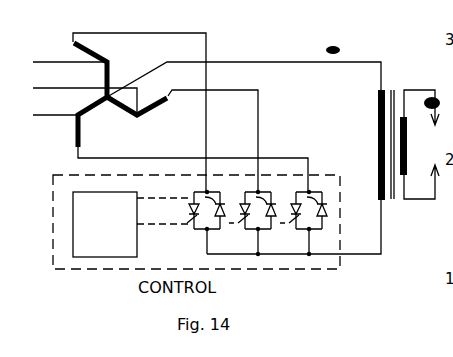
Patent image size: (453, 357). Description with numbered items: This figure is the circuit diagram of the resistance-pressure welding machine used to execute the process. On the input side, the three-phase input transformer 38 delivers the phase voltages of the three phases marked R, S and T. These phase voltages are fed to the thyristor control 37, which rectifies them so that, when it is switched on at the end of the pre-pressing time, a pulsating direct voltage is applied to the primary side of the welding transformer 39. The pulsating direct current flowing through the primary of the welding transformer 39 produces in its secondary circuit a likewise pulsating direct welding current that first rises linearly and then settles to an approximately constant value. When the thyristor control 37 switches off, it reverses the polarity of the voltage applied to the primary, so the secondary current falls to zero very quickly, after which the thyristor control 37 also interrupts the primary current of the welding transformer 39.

The thyristor control 37 is at (118, 247).
The three-phase input transformer 38 is at (99, 95).
The welding transformer 39 is at (409, 159).